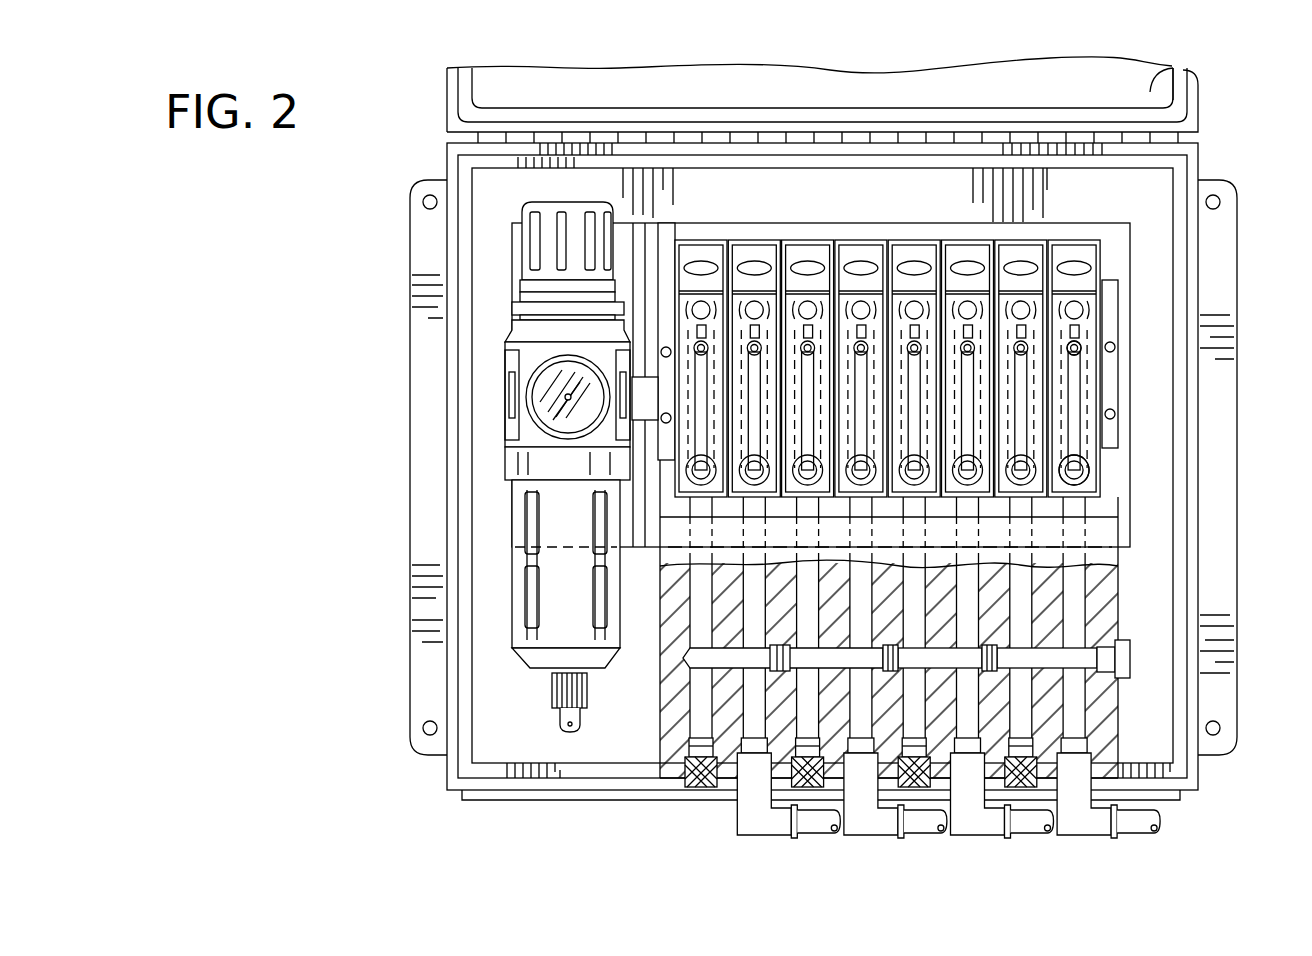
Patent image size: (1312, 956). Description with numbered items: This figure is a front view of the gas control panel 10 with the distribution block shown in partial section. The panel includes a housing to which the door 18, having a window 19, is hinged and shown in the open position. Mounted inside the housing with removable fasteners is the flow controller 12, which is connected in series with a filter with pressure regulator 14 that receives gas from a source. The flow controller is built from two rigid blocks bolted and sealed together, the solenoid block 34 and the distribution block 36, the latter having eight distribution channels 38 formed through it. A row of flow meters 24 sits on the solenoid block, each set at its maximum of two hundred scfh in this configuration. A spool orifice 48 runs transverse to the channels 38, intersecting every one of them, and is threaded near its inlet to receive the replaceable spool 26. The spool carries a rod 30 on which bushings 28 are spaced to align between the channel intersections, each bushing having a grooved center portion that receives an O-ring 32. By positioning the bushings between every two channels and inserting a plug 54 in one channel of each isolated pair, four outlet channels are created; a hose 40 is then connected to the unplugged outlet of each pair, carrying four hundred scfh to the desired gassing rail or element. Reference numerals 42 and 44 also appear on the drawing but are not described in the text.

The gas control panel 10 is at (1204, 160).
The flow controller 12 is at (1133, 300).
The filter with pressure regulator 14 is at (502, 462).
The door 18 is at (1202, 100).
The window 19 is at (1152, 90).
The flow meter 24 is at (1075, 238).
The spool 26 is at (1128, 642).
The bushing 28 is at (987, 658).
The rod 30 is at (1033, 657).
The O-ring 32 is at (889, 671).
The solenoid block 34 is at (1105, 503).
The distribution block 36 is at (1121, 565).
The distribution channel 38 is at (703, 705).
The hose 40 is at (800, 822).
The mounting screw 42 is at (1090, 468).
The indicator 44 is at (1082, 343).
The spool orifice 48 is at (730, 658).
The plug 54 is at (697, 772).